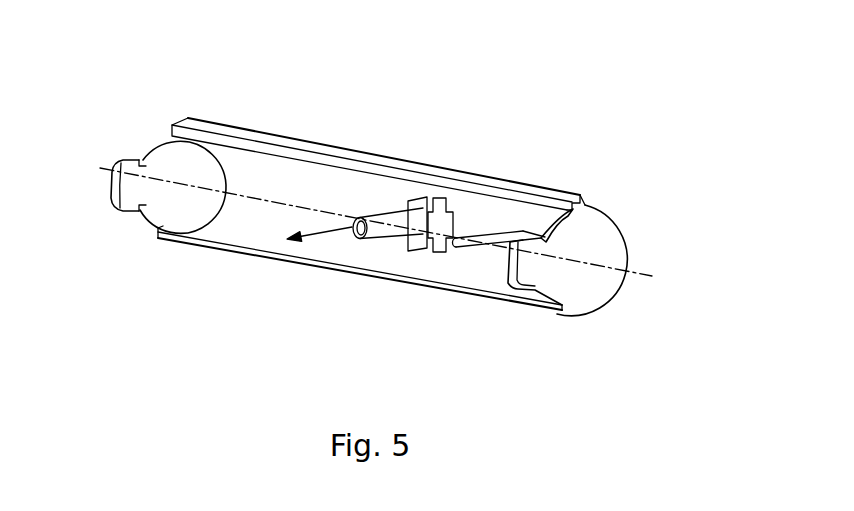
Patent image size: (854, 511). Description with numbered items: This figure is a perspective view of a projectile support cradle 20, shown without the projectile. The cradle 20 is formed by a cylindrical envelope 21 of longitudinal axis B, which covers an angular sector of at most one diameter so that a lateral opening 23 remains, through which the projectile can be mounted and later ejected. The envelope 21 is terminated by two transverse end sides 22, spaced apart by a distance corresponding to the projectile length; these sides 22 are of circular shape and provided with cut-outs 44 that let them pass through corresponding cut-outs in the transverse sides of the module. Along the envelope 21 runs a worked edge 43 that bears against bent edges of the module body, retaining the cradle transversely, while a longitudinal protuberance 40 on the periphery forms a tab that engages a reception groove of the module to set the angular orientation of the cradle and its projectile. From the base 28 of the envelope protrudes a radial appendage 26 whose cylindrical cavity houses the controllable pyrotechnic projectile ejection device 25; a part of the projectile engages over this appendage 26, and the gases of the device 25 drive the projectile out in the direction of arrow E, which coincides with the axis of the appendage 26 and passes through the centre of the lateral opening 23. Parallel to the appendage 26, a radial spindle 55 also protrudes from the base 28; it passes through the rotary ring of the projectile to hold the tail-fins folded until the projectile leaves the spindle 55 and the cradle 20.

The support cradle 20 is at (424, 126).
The cylindrical envelope 21 is at (393, 262).
The transverse end sides 22 is at (168, 158).
The lateral opening 23 is at (222, 228).
The projectile ejection device 25 is at (389, 197).
The radial appendage 26 is at (372, 205).
The base of the envelope 28 is at (272, 197).
The longitudinal protuberance 40 is at (590, 202).
The worked edge 43 is at (493, 183).
The cut-outs 44 is at (548, 202).
The radial spindle 55 is at (497, 248).
The axis B is at (650, 276).
The ejection direction arrow E is at (330, 236).